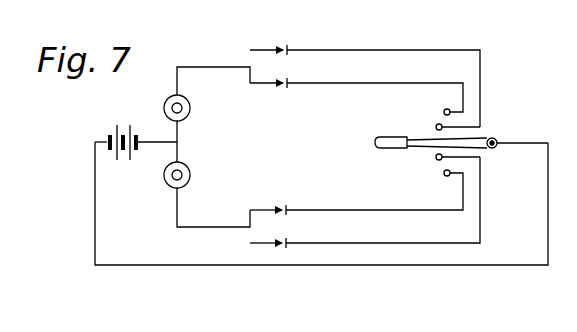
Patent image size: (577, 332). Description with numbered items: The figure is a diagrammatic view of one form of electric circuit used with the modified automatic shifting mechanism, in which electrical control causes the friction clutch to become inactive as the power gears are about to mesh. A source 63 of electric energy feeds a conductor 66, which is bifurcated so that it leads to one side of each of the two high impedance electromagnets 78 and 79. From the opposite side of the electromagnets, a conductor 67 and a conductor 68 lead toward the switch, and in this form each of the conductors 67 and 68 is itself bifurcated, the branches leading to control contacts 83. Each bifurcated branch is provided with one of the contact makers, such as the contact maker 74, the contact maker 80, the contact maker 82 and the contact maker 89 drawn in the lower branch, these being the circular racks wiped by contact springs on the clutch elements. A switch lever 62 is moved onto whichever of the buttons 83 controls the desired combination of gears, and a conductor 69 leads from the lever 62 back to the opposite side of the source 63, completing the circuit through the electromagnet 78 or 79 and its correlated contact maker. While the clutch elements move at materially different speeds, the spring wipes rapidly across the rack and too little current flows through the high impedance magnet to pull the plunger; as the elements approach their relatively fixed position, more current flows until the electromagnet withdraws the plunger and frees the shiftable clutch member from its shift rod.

The switch lever 62 is at (415, 147).
The source of electric energy 63 is at (115, 133).
The conductor 66 is at (156, 143).
The conductor 67 is at (195, 67).
The conductor 68 is at (204, 227).
The conductor 69 is at (281, 265).
The contact maker 74 is at (283, 47).
The electromagnet 78 is at (190, 103).
The electromagnet 79 is at (190, 170).
The contact maker 80 is at (280, 88).
The contact maker 82 is at (365, 202).
The control contacts 83 is at (446, 108).
The rectifier contact 89 is at (279, 205).